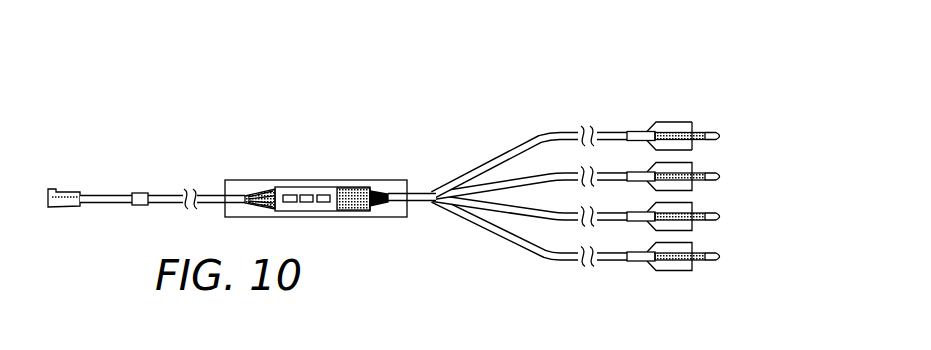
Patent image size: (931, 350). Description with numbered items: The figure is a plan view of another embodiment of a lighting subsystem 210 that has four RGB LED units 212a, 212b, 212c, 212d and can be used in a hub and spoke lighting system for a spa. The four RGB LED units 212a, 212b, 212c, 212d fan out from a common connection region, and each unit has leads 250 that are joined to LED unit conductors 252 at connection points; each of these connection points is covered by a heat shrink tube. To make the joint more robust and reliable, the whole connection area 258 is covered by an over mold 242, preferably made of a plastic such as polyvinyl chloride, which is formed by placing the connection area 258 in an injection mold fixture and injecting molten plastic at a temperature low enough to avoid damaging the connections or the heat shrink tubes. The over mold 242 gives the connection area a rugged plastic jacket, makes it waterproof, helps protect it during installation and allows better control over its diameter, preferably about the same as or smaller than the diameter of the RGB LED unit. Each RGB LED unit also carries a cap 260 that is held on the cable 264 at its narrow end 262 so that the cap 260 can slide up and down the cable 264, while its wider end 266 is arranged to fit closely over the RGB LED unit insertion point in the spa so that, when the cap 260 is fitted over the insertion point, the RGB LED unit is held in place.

The lighting subsystem 210 is at (243, 124).
The RGB LED unit 212a is at (723, 136).
The RGB LED unit 212b is at (723, 176).
The RGB LED unit 212c is at (723, 216).
The RGB LED unit 212d is at (723, 256).
The over mold 242 is at (675, 123).
The leads 250 is at (704, 131).
The LED unit conductors 252 is at (660, 123).
The connection area 258 is at (652, 297).
The cap 260 is at (646, 270).
The narrow end 262 is at (637, 128).
The cable 264 is at (412, 213).
The wider end 266 is at (688, 123).